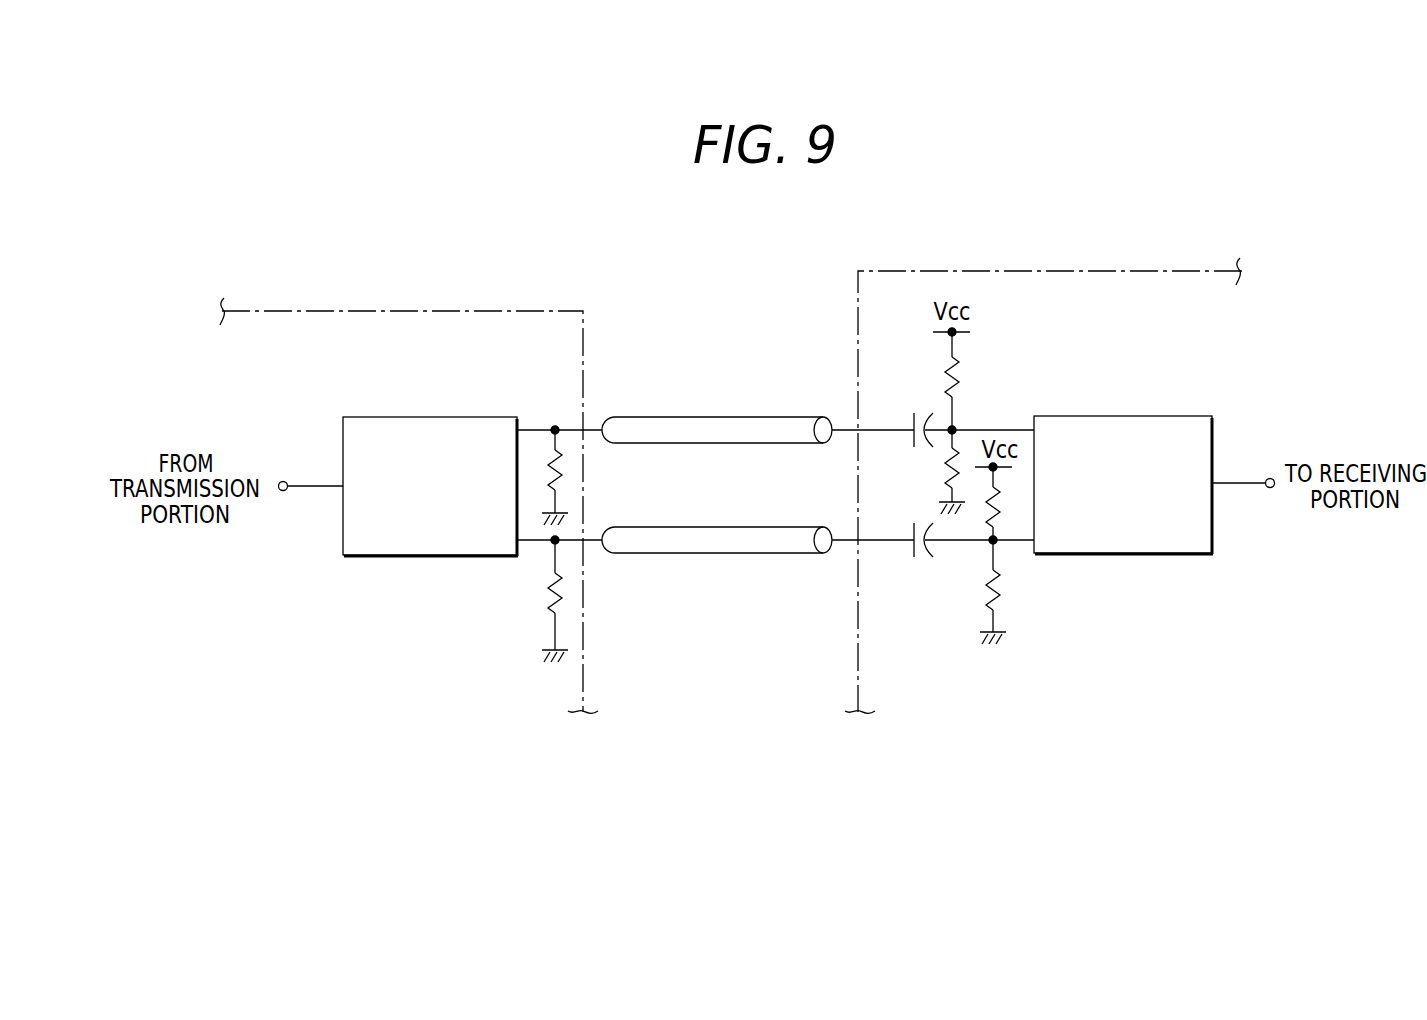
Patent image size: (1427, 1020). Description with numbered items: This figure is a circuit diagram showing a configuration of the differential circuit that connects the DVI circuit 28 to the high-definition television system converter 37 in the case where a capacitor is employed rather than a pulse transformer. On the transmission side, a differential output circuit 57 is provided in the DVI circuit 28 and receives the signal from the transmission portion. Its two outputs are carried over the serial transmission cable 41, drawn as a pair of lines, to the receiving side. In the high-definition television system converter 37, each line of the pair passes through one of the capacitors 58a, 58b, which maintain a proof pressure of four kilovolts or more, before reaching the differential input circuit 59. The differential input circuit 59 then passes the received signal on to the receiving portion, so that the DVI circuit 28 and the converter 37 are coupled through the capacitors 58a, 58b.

The DVI circuit 28 is at (388, 312).
The high-definition television system converter 37 is at (1135, 270).
The serial transmission cable 41 is at (677, 417).
The differential output circuit 57 is at (382, 417).
The capacitor 58a is at (918, 407).
The capacitor 58b is at (922, 557).
The differential input circuit 59 is at (1160, 416).